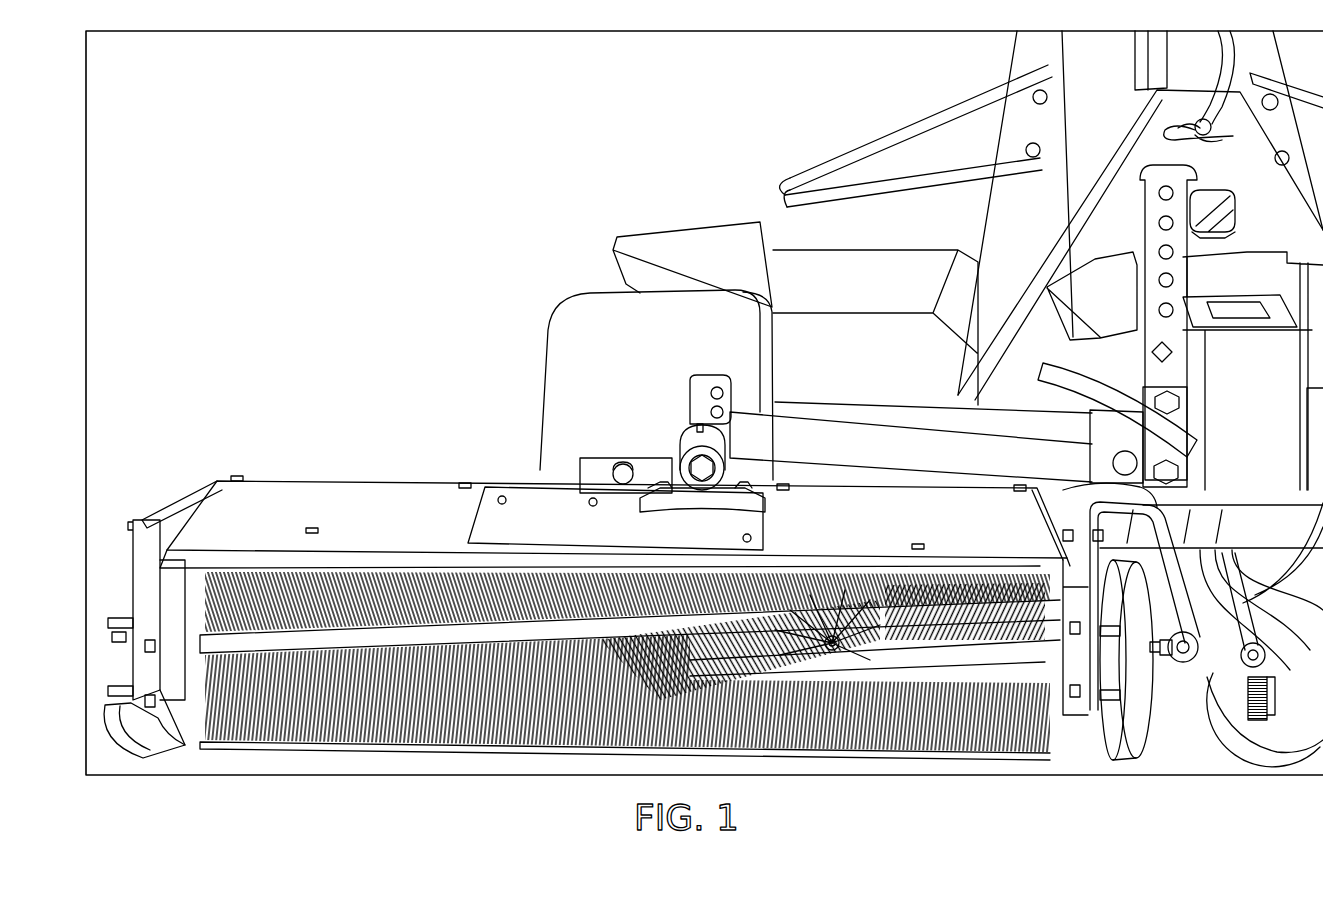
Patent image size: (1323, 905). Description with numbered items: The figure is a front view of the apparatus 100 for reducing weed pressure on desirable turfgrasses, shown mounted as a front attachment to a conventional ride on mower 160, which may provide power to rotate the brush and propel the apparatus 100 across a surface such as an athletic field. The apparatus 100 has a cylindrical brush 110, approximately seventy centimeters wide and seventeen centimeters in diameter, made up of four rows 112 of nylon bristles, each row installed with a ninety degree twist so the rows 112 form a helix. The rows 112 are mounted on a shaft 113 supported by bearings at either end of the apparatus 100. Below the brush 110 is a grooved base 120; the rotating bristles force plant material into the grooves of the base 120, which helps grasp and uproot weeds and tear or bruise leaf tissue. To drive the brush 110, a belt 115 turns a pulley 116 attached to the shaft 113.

The apparatus 100 is at (421, 470).
The cylindrical brush 110 is at (165, 745).
The rows of brushes 112 is at (228, 650).
The shaft 113 is at (383, 640).
The belt 115 is at (1128, 732).
The pulley 116 is at (1153, 720).
The grooved base 120 is at (395, 745).
The ride on mower 160 is at (678, 228).